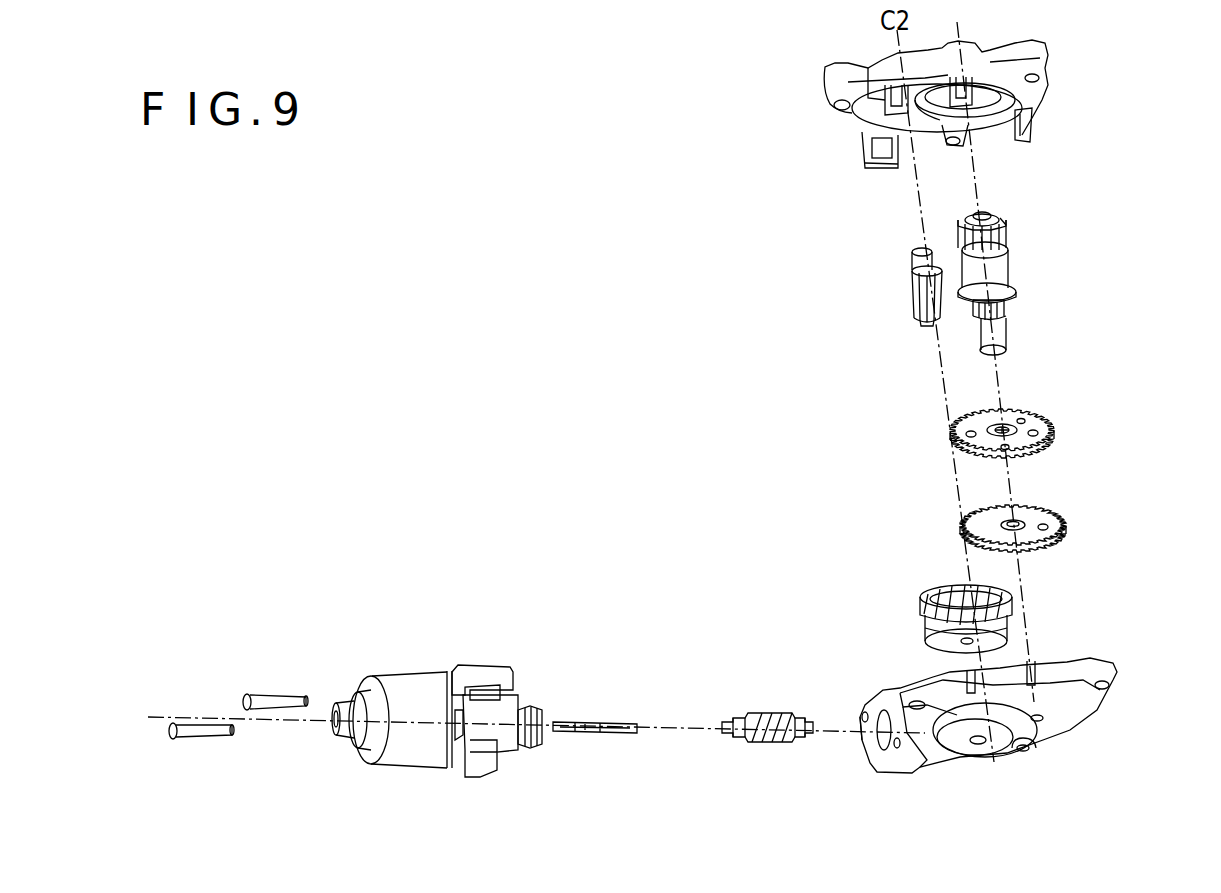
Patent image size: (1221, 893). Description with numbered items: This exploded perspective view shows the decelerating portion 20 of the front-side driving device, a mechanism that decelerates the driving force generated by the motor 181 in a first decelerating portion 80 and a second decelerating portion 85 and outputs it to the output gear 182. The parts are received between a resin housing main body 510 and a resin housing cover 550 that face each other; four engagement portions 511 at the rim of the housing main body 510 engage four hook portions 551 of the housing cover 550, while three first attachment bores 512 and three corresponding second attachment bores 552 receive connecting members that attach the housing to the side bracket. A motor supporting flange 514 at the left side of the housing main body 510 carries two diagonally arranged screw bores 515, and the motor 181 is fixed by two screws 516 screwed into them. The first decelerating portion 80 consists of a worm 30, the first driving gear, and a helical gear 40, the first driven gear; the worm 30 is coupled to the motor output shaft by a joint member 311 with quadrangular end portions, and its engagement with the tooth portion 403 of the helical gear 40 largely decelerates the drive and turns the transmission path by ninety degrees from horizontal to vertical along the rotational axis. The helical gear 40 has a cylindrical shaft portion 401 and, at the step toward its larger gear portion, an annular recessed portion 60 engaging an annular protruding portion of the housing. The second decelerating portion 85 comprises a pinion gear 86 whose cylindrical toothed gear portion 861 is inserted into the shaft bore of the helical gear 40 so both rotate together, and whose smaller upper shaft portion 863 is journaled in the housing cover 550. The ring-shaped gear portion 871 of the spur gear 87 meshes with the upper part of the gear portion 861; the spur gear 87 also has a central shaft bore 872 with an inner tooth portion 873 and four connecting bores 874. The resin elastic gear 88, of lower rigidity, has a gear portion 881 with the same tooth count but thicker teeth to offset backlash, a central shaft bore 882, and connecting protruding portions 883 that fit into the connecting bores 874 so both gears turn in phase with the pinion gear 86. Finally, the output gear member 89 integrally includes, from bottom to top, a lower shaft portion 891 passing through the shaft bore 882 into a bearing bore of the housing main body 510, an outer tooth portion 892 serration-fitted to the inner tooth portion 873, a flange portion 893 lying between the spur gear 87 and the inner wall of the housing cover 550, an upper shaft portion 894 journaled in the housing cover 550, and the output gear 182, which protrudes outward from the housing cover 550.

The decelerating portion 20 is at (805, 196).
The worm 30 is at (767, 713).
The helical gear 40 is at (923, 601).
The annular recessed portion 60 is at (927, 633).
The first decelerating portion 80 is at (813, 622).
The second decelerating portion 85 is at (925, 408).
The pinion gear 86 is at (877, 277).
The spur gear 87 is at (1068, 402).
The elastic gear 88 is at (1088, 513).
The output gear member 89 is at (1042, 274).
The motor 181 is at (410, 683).
The output gear 182 is at (1000, 218).
The joint member 311 is at (612, 722).
The shaft portion 401 is at (952, 648).
The tooth portion 403 is at (923, 600).
The housing main body 510 is at (993, 715).
The engagement portions 511 is at (1037, 680).
The first attachment bores 512 is at (1105, 690).
The motor supporting flange 514 is at (873, 768).
The screw bores 515 is at (920, 767).
The screw 516 is at (275, 695).
The housing cover 550 is at (996, 103).
The hook portions 551 is at (1043, 133).
The second attachment bores 552 is at (1043, 88).
The gear portion 861 is at (913, 293).
The upper shaft portion 863 is at (910, 260).
The gear portion 871 is at (1052, 420).
The shaft bore 872 is at (1007, 436).
The inner tooth portion 873 is at (1012, 434).
The connecting bores 874 is at (1023, 403).
The gear portion 881 is at (1104, 523).
The shaft bore 882 is at (1018, 528).
The connecting protruding portions 883 is at (1030, 498).
The lower shaft portion 891 is at (1003, 330).
The outer tooth portion 892 is at (1012, 292).
The flange portion 893 is at (1002, 270).
The upper shaft portion 894 is at (1005, 252).